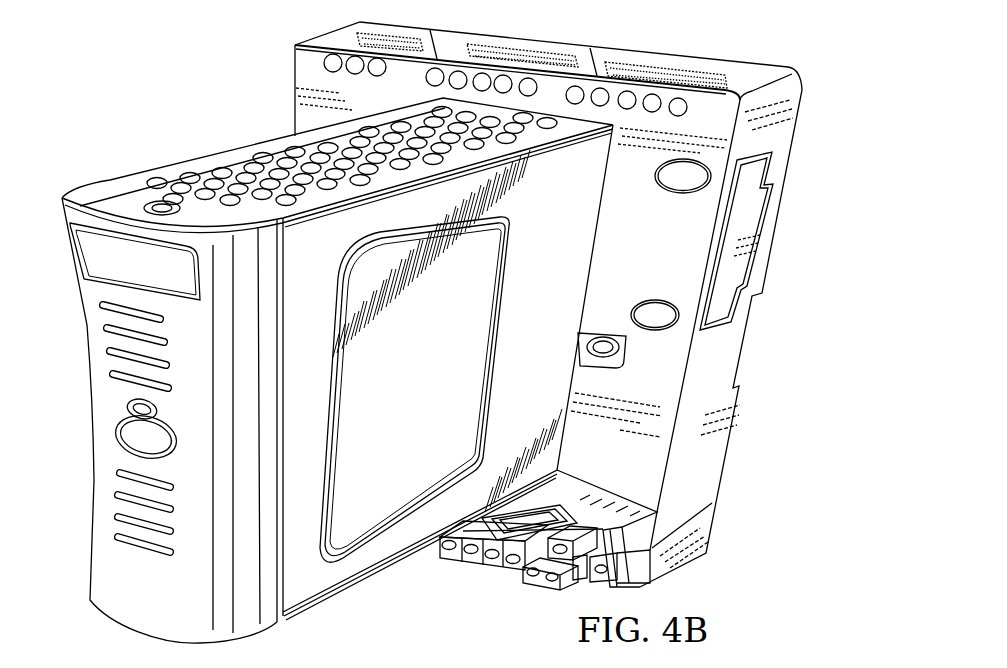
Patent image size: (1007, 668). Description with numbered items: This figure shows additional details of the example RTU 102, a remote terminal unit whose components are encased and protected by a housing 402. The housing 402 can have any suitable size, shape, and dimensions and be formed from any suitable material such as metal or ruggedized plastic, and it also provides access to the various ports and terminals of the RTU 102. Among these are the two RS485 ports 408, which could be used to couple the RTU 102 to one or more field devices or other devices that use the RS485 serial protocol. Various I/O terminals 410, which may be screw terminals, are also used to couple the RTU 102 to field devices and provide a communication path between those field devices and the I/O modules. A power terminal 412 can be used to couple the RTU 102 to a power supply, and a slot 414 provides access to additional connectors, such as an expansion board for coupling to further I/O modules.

The RTU 102 is at (143, 58).
The housing 402 is at (216, 133).
The RS485 ports 408 is at (704, 50).
The I/O terminals 410 is at (653, 528).
The power terminal 412 is at (303, 30).
The slot 414 is at (772, 238).